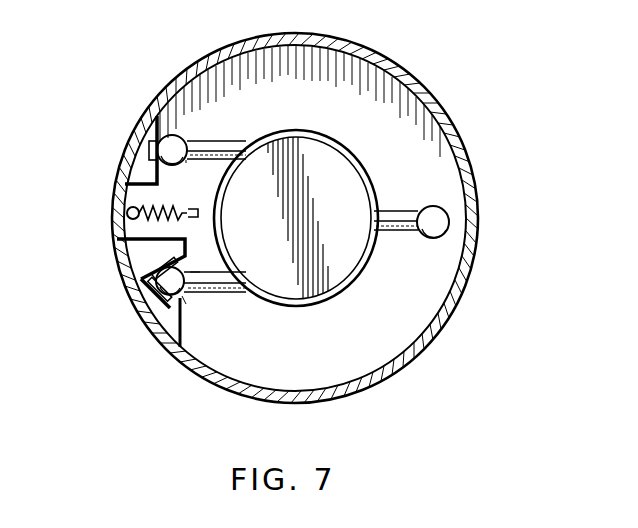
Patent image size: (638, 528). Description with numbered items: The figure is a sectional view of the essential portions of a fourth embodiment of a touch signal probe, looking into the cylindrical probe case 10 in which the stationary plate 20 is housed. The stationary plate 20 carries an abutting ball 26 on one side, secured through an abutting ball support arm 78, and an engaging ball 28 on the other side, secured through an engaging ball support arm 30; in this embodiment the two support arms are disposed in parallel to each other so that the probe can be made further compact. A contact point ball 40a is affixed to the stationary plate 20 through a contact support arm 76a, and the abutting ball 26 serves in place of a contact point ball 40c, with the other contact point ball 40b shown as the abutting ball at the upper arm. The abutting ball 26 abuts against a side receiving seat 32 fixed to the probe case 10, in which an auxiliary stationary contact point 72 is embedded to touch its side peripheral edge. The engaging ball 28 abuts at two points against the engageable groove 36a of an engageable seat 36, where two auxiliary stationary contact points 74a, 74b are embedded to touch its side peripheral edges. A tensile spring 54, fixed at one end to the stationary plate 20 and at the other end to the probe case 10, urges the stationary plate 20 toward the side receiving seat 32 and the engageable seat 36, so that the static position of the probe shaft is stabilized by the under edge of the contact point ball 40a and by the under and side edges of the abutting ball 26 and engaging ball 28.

The probe case 10 is at (458, 140).
The stationary plate 20 is at (340, 172).
The abutting ball 26 is at (206, 137).
The contact point ball 40b is at (177, 143).
The engaging ball 28 is at (211, 296).
The contact point ball 40c is at (182, 292).
The engaging ball support arm 30 is at (198, 277).
The side receiving seat 32 is at (152, 128).
The engageable seat 36 is at (178, 325).
The engageable groove 36a is at (185, 308).
The contact point ball 40a is at (425, 215).
The tensile spring 54 is at (172, 213).
The auxiliary stationary contact point 72 is at (149, 152).
The auxiliary stationary contact point 74a is at (150, 300).
The auxiliary stationary contact point 74b is at (150, 265).
The contact support arm 76a is at (397, 232).
The abutting ball support arm 78 is at (185, 160).